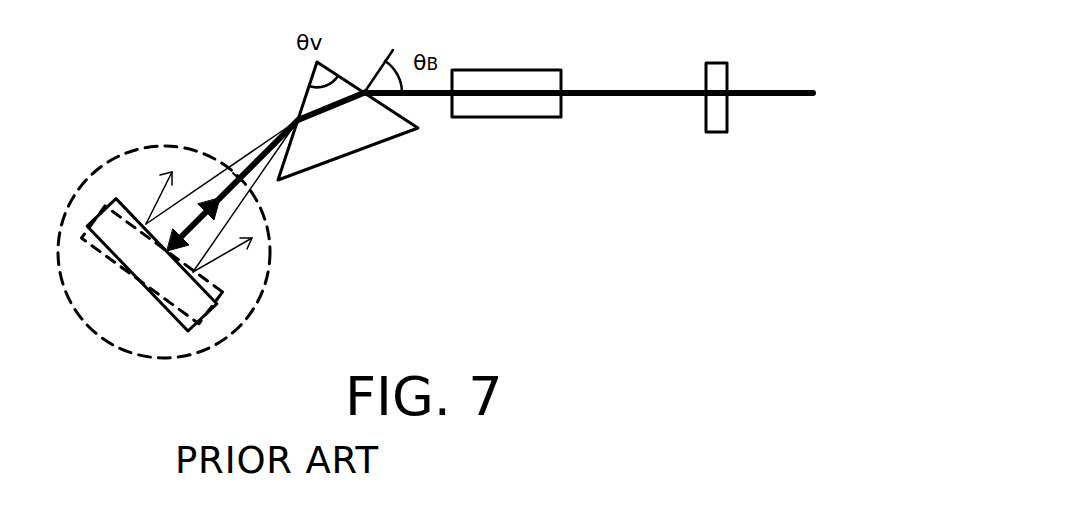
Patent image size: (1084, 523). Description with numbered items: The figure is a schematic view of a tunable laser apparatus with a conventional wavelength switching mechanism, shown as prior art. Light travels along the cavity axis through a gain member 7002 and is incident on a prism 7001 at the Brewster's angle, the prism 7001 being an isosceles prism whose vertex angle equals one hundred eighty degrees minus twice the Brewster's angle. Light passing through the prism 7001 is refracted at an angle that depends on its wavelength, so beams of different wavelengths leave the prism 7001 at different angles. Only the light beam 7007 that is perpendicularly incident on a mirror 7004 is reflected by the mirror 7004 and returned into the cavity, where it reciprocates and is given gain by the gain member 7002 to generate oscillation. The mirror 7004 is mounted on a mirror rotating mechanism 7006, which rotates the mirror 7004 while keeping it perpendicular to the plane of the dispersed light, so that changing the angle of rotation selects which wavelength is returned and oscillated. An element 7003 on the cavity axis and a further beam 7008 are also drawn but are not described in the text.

The prism 7001 is at (333, 140).
The gain member 7002 is at (510, 102).
The output coupler 7003 is at (720, 107).
The mirror 7004 is at (200, 298).
The mirror rotating mechanism 7006 is at (128, 337).
The light beam 7007 is at (230, 200).
The light path of rotated mirror 7008 is at (152, 183).